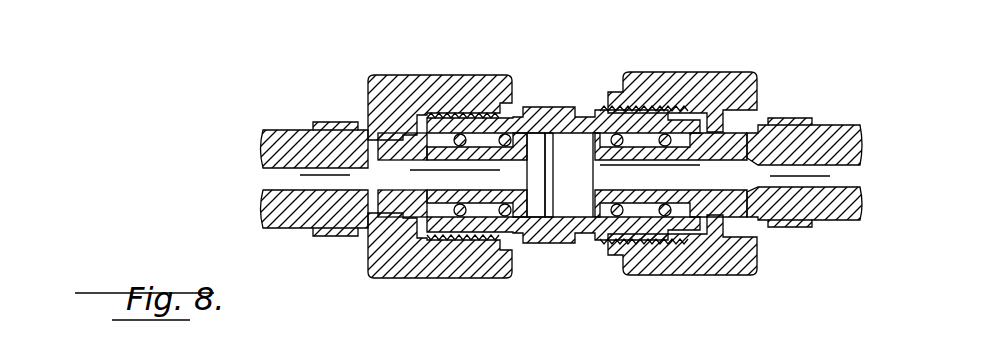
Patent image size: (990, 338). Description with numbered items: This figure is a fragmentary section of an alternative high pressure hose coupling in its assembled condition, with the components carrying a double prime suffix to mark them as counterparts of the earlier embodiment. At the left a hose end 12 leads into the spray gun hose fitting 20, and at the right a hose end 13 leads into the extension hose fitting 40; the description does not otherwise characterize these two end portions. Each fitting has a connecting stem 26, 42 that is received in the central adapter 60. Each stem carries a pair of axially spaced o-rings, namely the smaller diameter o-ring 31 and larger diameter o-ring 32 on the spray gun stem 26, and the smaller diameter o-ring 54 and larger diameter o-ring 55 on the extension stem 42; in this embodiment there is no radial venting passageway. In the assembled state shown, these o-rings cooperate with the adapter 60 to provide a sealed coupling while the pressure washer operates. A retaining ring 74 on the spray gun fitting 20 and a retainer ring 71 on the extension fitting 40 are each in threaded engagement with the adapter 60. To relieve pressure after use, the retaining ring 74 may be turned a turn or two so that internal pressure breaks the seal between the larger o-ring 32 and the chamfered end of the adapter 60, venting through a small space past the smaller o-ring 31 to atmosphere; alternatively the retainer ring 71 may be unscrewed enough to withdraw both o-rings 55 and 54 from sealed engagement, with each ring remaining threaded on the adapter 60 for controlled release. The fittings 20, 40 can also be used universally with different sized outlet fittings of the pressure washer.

The first tube 12 is at (266, 152).
The second tube 13 is at (862, 145).
The spray gun hose fitting 20 is at (377, 127).
The connecting stem 26 is at (370, 237).
The smaller diameter o-ring 31 is at (507, 216).
The larger diameter o-ring 32 is at (460, 216).
The extension hose fitting 40 is at (756, 115).
The connecting stem 42 is at (724, 197).
The smaller diameter o-ring 54 is at (617, 216).
The larger diameter o-ring 55 is at (665, 216).
The adapter 60 is at (573, 98).
The retainer ring 71 is at (750, 78).
The retaining ring 74 is at (380, 87).